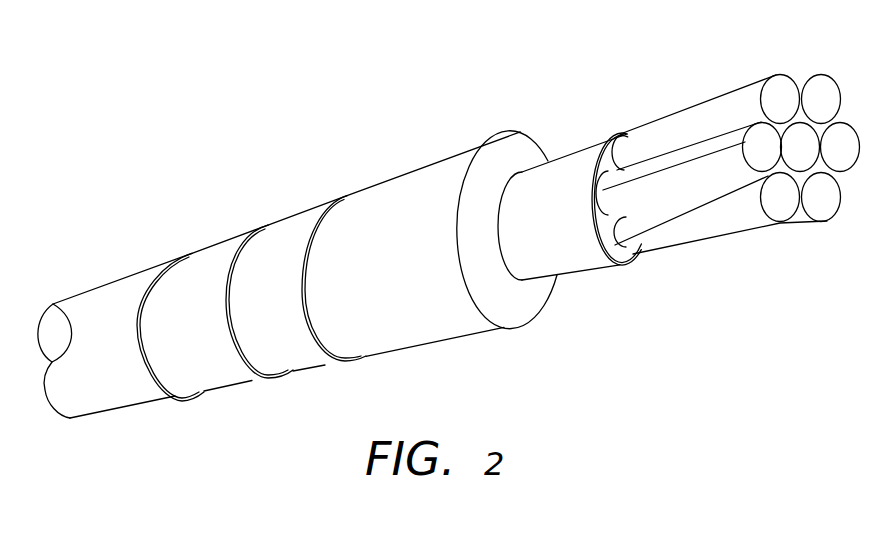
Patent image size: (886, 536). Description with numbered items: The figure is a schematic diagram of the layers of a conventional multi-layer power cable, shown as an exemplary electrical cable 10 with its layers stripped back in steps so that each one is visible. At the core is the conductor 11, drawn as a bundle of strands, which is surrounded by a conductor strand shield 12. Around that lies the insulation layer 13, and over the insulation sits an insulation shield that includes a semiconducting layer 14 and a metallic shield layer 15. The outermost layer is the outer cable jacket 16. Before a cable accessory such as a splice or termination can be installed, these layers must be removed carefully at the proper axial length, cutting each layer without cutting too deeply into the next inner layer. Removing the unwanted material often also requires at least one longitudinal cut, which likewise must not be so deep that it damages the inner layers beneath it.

The electrical cable 10 is at (224, 76).
The conductor 11 is at (698, 112).
The conductor strand shield 12 is at (580, 149).
The insulation layer 13 is at (415, 172).
The semiconducting layer 14 is at (300, 215).
The metallic shield layer 15 is at (220, 242).
The outer cable jacket 16 is at (104, 283).